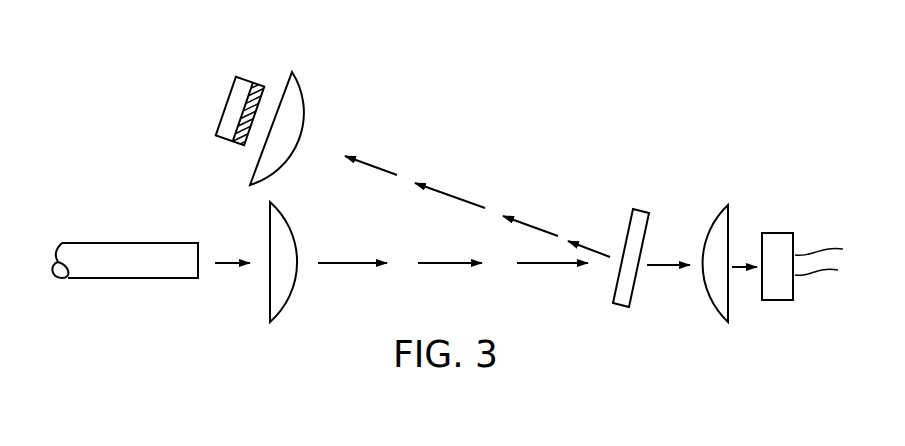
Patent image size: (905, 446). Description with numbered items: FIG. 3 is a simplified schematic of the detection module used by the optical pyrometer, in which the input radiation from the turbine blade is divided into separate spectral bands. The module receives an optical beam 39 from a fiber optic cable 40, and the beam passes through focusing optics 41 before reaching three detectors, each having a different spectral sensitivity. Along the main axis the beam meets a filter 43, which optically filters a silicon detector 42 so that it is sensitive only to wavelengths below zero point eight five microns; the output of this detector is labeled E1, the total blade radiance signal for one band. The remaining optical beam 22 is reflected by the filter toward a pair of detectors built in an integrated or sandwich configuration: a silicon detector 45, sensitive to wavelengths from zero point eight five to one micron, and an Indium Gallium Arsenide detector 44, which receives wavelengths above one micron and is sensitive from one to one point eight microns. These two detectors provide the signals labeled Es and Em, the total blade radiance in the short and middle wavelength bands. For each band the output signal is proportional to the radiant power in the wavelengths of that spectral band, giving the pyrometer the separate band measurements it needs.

The reflected light beam 22 is at (476, 134).
The optical beam 39 is at (231, 263).
The fiber optic cable 40 is at (117, 279).
The focusing optics 41 is at (289, 297).
The silicon detector 42 is at (772, 300).
The filter 43 is at (634, 283).
The Indium Gallium Arsenide detector 44 is at (247, 76).
The silicon detector 45 is at (240, 147).
The total blade radiance in middle wavelength band Em is at (227, 100).
The total blade radiance in short wavelength band Es is at (218, 127).
The total blade radiance in long wavelength band E1 is at (835, 255).